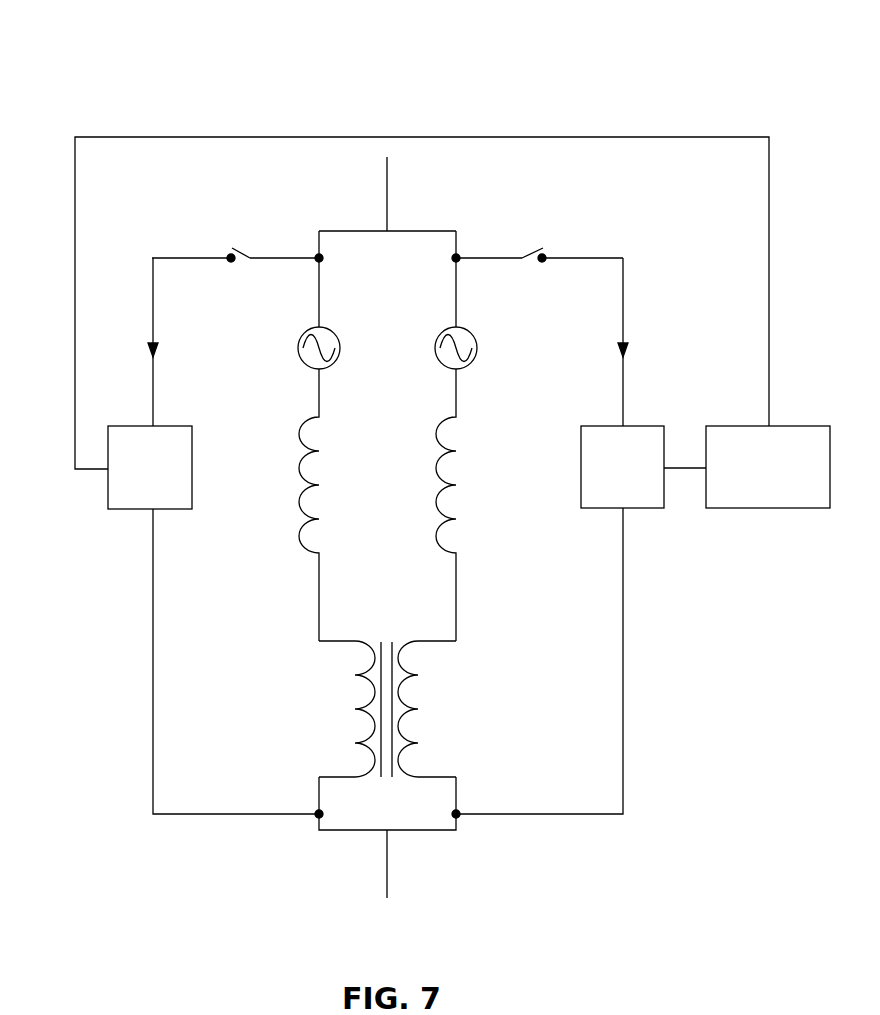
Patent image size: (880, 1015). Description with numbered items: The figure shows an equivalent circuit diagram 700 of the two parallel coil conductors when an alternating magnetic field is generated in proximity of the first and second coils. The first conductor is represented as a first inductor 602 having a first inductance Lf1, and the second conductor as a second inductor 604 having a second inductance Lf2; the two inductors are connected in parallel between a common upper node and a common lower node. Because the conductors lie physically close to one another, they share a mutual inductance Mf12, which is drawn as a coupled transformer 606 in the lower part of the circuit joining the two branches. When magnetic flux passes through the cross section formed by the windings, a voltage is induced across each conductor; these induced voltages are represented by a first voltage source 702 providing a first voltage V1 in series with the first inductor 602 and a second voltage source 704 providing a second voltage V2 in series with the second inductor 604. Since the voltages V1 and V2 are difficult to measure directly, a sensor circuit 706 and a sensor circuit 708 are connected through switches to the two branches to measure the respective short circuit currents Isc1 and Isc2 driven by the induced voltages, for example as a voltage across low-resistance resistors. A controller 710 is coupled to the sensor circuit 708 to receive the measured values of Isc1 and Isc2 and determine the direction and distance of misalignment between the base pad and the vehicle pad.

The equivalent circuit diagram 700 is at (132, 60).
The first voltage source 702 is at (313, 328).
The second voltage source 704 is at (441, 330).
The first inductor 602 is at (300, 427).
The second inductor 604 is at (438, 427).
The coupled transformer 606 is at (355, 707).
The sensor circuit 706 is at (150, 467).
The sensor circuit 708 is at (622, 467).
The controller 710 is at (768, 467).